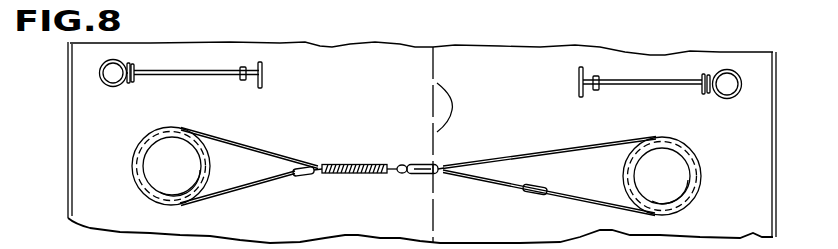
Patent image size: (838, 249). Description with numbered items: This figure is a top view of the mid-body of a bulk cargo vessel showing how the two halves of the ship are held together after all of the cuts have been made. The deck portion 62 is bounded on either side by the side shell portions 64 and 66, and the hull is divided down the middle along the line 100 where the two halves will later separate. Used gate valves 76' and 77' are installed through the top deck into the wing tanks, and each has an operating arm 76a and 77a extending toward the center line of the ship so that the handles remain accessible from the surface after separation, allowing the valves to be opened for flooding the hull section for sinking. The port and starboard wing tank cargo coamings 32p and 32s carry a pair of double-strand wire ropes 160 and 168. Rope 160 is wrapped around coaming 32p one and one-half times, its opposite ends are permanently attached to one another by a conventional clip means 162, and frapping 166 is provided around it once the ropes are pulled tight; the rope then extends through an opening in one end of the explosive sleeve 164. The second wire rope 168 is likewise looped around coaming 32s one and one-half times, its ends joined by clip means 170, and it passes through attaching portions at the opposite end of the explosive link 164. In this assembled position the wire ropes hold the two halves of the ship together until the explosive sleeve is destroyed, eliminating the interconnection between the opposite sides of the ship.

The deck portion 62 is at (325, 48).
The side shell portion 64 is at (777, 112).
The side shell portion 66 is at (68, 139).
The center seam / dividing line 100 is at (437, 70).
The gate valve 76' is at (113, 98).
The operating arm 76a is at (180, 77).
The gate valve 77' is at (733, 101).
The operating arm 77a is at (618, 86).
The port wing tank cargo coaming 32p is at (146, 197).
The starboard wing tank cargo coaming 32s is at (692, 196).
The wire rope 160 is at (247, 151).
The clip means 162 is at (302, 178).
The explosive sleeve 164 is at (417, 177).
The frapping 166 is at (350, 175).
The wire rope 168 is at (550, 152).
The clip means 170 is at (533, 196).